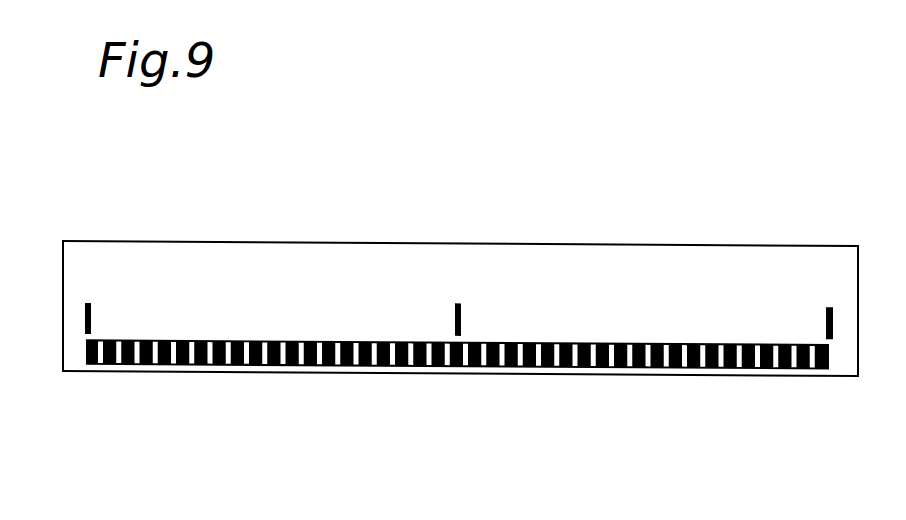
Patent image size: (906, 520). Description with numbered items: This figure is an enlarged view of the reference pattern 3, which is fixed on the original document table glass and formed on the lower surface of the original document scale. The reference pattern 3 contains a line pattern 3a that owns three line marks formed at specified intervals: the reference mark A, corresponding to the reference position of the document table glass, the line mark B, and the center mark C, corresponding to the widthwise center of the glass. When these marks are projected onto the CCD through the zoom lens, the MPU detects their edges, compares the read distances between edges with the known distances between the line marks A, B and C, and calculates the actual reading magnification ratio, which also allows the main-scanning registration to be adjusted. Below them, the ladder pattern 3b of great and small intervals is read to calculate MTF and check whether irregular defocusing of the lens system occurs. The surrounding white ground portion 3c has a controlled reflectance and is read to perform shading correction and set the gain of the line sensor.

The reference pattern 3 is at (216, 242).
The line pattern 3a is at (75, 291).
The ladder pattern 3b is at (73, 350).
The white ground portion 3c is at (333, 258).
The reference mark A is at (831, 307).
The line mark B is at (88, 303).
The center mark C is at (458, 303).